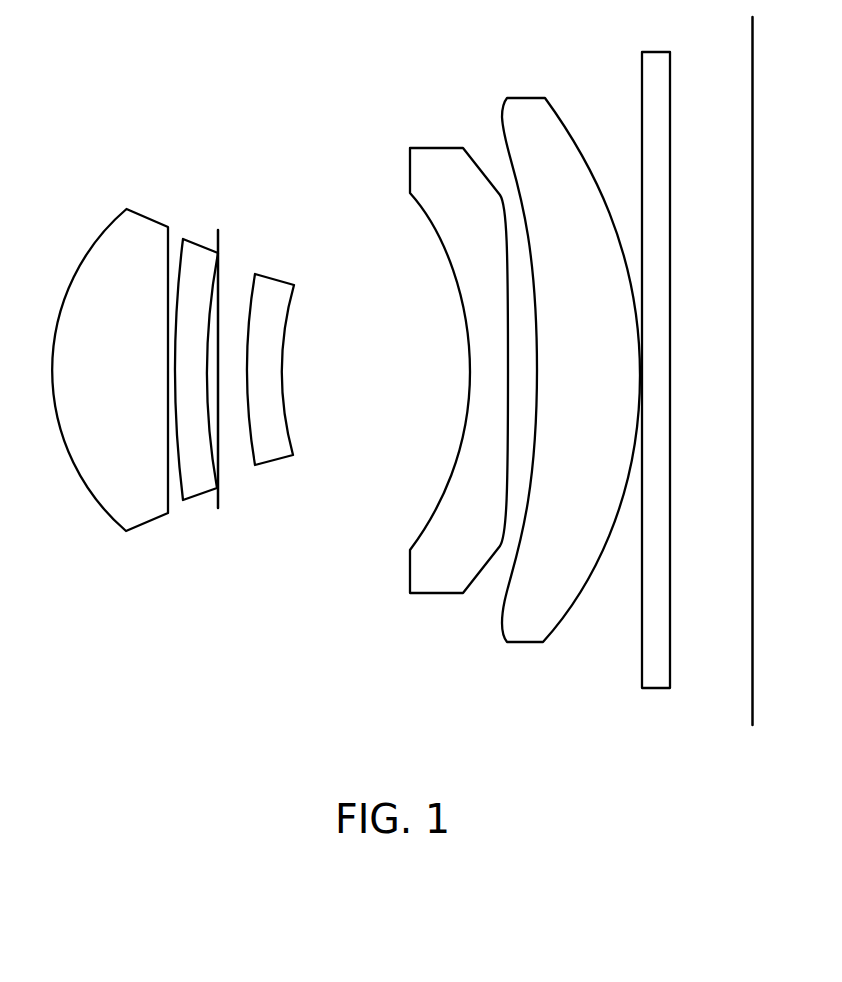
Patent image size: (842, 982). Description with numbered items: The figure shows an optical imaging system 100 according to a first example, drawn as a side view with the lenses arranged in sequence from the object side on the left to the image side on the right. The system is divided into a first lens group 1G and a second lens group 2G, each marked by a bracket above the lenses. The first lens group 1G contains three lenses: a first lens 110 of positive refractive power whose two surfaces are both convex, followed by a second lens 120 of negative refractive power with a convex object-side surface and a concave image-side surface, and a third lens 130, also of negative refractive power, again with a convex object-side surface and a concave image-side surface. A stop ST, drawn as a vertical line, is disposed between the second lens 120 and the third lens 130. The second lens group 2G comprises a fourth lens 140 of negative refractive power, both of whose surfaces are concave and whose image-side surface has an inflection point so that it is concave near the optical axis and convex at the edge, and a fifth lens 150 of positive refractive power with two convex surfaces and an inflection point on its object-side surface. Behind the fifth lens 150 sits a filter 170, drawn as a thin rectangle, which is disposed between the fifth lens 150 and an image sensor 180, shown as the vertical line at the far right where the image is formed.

The optical imaging system 100 is at (86, 88).
The first lens group 1G is at (307, 205).
The second lens group 2G is at (633, 80).
The first lens 110 is at (146, 528).
The second lens 120 is at (205, 497).
The third lens 130 is at (275, 467).
The fourth lens 140 is at (437, 595).
The fifth lens 150 is at (525, 643).
The filter 170 is at (642, 668).
The image sensor 180 is at (752, 713).
The stop ST is at (220, 500).